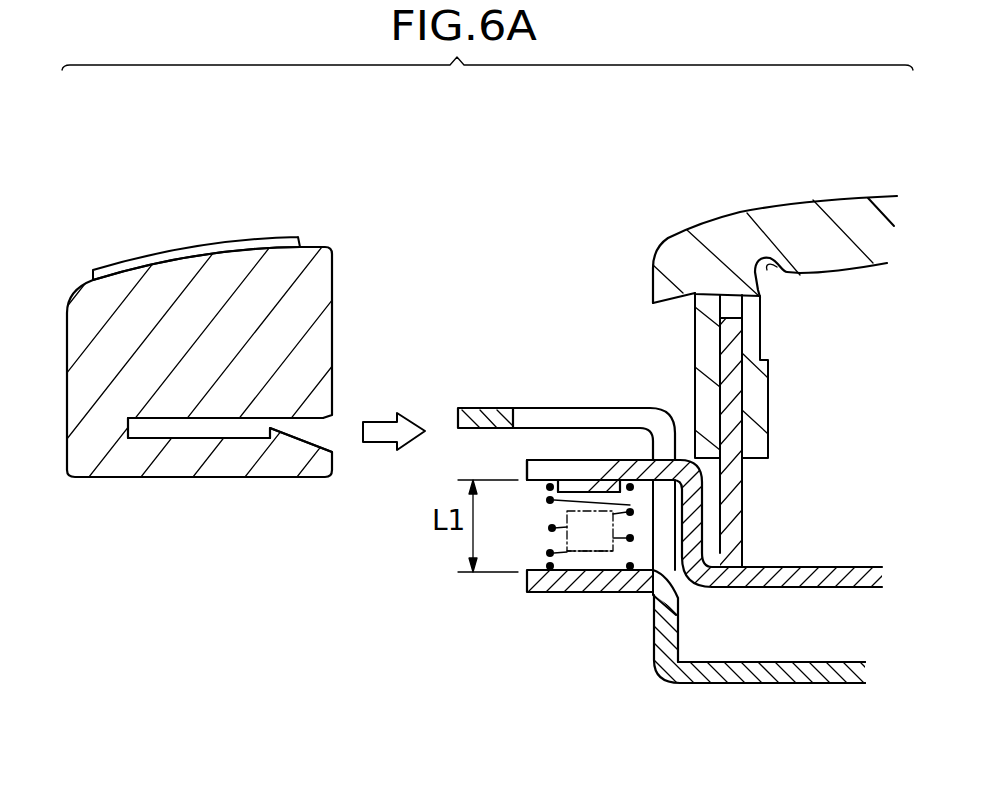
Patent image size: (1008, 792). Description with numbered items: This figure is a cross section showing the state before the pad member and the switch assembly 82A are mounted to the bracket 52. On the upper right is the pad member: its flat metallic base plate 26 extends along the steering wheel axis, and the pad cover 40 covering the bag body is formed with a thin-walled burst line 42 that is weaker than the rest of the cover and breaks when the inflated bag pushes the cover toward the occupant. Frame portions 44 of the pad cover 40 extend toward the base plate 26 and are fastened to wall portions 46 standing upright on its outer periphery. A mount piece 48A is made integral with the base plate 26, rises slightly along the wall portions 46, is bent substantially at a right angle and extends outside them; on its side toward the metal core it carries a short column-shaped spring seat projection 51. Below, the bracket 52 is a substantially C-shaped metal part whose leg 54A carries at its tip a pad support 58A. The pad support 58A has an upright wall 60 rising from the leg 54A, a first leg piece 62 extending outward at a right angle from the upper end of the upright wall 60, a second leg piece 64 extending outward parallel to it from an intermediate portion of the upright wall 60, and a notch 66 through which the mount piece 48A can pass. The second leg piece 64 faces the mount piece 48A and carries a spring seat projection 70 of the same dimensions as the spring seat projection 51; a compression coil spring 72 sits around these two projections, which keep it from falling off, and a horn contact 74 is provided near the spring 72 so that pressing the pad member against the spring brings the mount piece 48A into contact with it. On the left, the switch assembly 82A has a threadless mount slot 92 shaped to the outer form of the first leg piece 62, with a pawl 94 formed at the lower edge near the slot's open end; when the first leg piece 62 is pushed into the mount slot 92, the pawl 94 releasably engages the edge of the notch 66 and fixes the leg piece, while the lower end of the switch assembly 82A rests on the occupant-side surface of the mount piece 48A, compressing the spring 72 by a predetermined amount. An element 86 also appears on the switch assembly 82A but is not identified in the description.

The base plate 26 is at (797, 571).
The pad cover 40 is at (848, 198).
The burst line 42 is at (773, 270).
The frame portions 44 is at (706, 331).
The wall portions 46 is at (733, 349).
The mount piece 48A is at (526, 466).
The spring seat projection 51 is at (587, 486).
The bracket 52 is at (779, 702).
The leg 54A is at (742, 684).
The pad support 58A is at (558, 599).
The upright wall 60 is at (672, 625).
The first leg piece 62 is at (487, 407).
The second leg piece 64 is at (540, 591).
The notch 66 is at (536, 411).
The spring seat projection 70 is at (592, 538).
The compression coil spring 72 is at (546, 526).
The horn contact 74 is at (599, 578).
The switch assembly 82A is at (261, 198).
The cushion strip 86 is at (156, 256).
The mount slot 92 is at (300, 428).
The pawl 94 is at (268, 428).